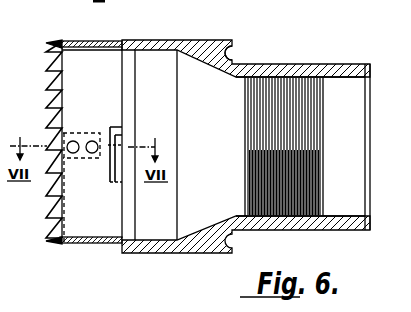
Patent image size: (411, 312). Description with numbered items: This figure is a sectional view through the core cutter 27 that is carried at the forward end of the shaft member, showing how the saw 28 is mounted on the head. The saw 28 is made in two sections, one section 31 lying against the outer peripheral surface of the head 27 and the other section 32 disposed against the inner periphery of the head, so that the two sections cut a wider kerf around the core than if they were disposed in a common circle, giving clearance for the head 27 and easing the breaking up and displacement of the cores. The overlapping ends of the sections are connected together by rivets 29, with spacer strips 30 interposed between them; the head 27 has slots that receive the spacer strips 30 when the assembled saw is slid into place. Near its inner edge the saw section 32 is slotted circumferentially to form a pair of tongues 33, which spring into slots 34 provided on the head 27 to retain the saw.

The core cutter 27 is at (227, 45).
The saw 28 is at (50, 68).
The rivets 29 is at (91, 141).
The spacer strips 30 is at (77, 158).
The saw section 31 is at (92, 41).
The saw section 32 is at (88, 232).
The tongues 33 is at (120, 145).
The slots 34 is at (121, 124).